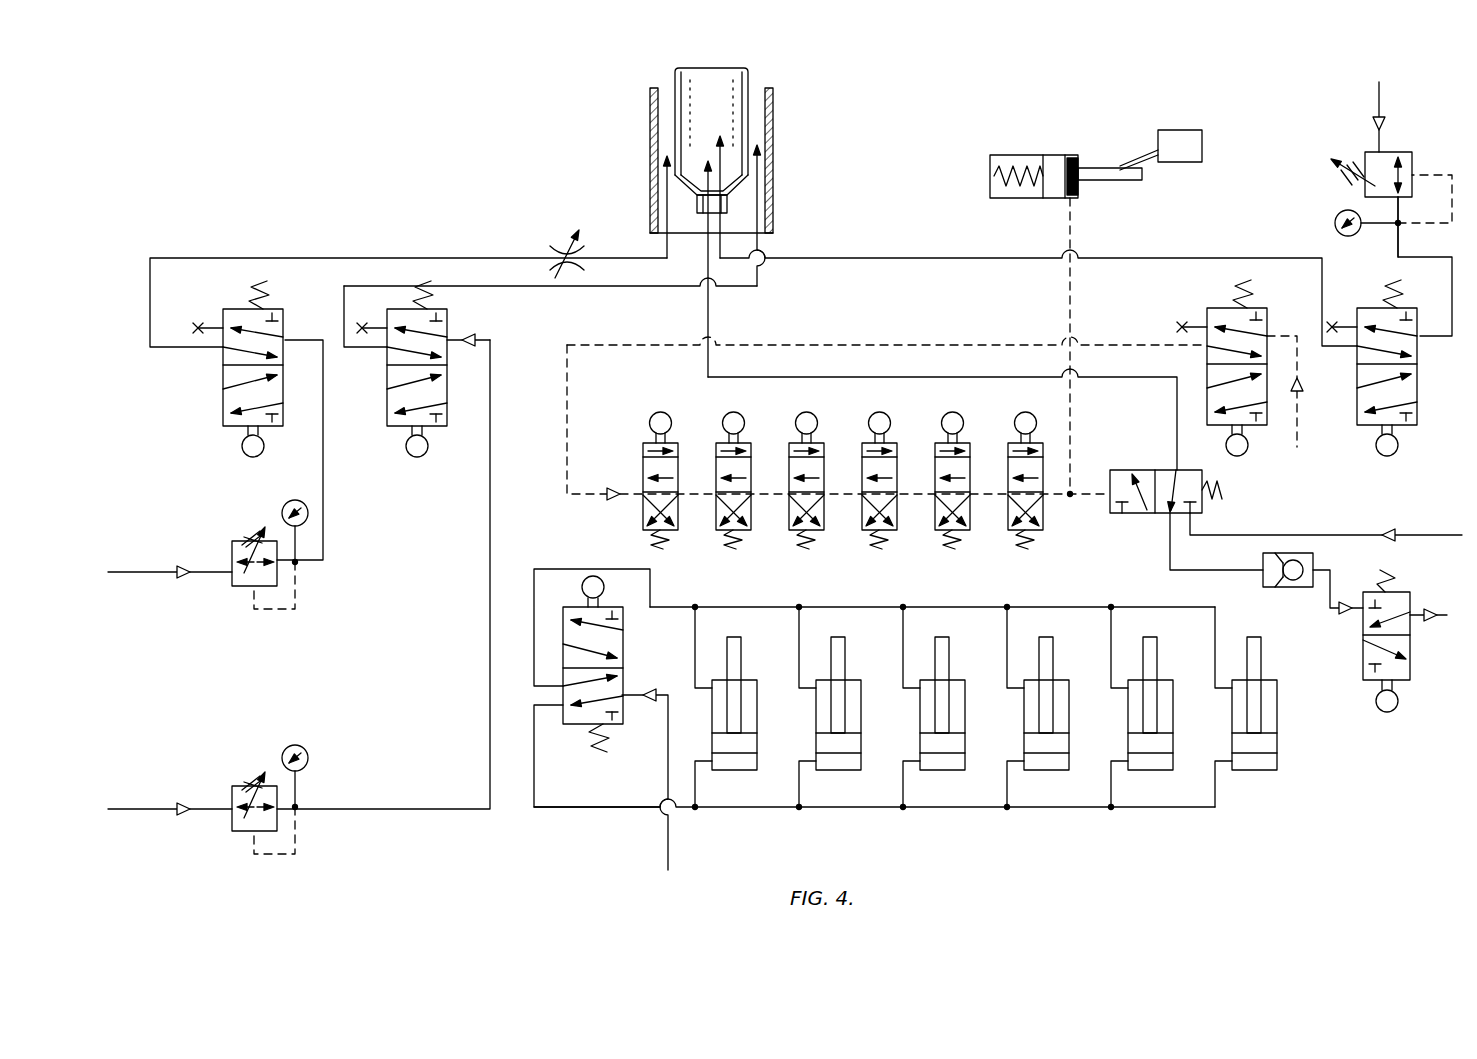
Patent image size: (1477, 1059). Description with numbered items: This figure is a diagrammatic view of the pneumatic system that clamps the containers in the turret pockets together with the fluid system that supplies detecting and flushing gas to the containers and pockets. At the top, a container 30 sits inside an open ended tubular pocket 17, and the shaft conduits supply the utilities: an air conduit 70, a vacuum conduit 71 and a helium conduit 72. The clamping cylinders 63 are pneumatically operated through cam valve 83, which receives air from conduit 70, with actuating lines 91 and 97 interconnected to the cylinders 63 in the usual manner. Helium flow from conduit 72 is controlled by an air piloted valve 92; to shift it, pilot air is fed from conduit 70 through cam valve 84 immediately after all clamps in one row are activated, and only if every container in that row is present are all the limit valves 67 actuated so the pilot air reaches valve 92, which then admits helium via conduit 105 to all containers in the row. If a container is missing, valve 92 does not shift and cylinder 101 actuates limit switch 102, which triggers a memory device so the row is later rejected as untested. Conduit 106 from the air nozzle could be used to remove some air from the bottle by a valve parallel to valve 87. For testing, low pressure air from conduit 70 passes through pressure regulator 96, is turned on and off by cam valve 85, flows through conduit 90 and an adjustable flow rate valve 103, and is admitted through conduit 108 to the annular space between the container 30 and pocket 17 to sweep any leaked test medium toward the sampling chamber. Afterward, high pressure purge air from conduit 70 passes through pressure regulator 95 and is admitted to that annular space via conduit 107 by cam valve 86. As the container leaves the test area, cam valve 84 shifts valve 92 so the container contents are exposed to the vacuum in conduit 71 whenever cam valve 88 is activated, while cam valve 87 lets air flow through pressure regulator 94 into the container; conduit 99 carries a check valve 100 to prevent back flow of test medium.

The tubular pocket 17 is at (773, 115).
The container 30 is at (746, 72).
The clamping cylinder 63 is at (918, 735).
The contact valve 67 is at (862, 460).
The air conduit 70 is at (148, 573).
The vacuum conduit 71 is at (1413, 618).
The helium conduit 72 is at (1448, 539).
The cam valve 83 is at (610, 726).
The cam valve 84 is at (1212, 310).
The cam valve 85 is at (224, 310).
The cam valve 86 is at (447, 312).
The cam valve 87 is at (1420, 385).
The cam valve 88 is at (1366, 650).
The conduit 90 is at (390, 256).
The actuating line 91 is at (866, 610).
The air piloted valve 92 is at (1166, 472).
The pressure regulator 94 is at (1418, 145).
The pressure regulator 95 is at (233, 787).
The pressure regulator 96 is at (233, 542).
The actuating line 97 is at (1010, 808).
The conduit 99 is at (1333, 590).
The check valve 100 is at (1264, 566).
The cylinder 101 is at (1016, 156).
The limit switch 102 is at (1190, 124).
The adjustable flow rate valve 103 is at (560, 244).
The conduit 105 is at (697, 223).
The conduit 106 is at (723, 222).
The conduit 107 is at (760, 244).
The conduit 108 is at (660, 192).